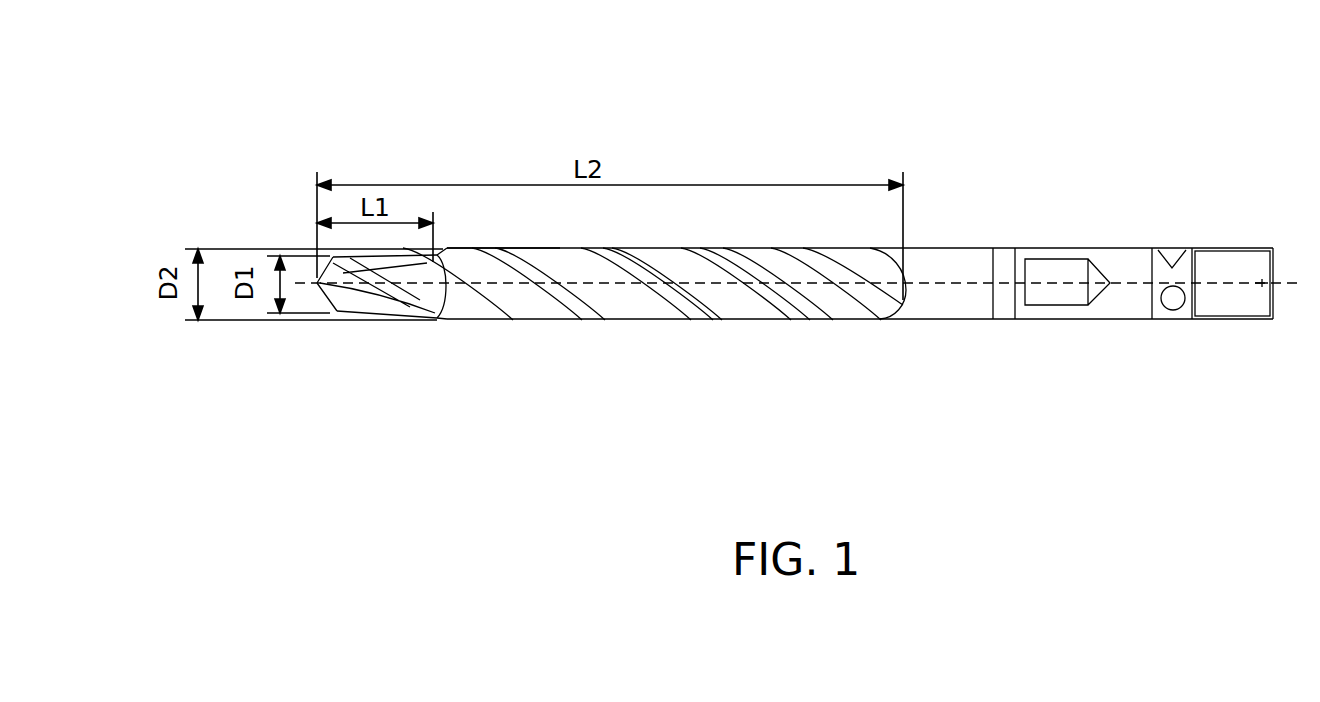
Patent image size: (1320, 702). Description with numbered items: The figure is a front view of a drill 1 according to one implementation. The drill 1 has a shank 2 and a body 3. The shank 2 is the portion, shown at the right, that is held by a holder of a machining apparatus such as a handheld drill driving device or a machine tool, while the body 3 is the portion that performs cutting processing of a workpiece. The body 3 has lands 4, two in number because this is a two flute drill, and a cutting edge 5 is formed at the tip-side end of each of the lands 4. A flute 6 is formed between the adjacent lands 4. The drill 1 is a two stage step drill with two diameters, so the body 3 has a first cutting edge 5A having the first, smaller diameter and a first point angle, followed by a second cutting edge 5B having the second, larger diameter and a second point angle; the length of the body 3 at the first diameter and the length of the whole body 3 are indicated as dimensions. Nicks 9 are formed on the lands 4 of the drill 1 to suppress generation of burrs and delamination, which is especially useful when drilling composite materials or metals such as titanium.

The drill 1 is at (935, 128).
The shank 2 is at (1031, 318).
The body 3 is at (567, 332).
The lands 4 is at (638, 300).
The cutting edges 5 is at (470, 376).
The first cutting edge 5A is at (323, 302).
The second cutting edge 5B is at (437, 262).
The flute 6 is at (723, 304).
The nicks 9 is at (520, 268).